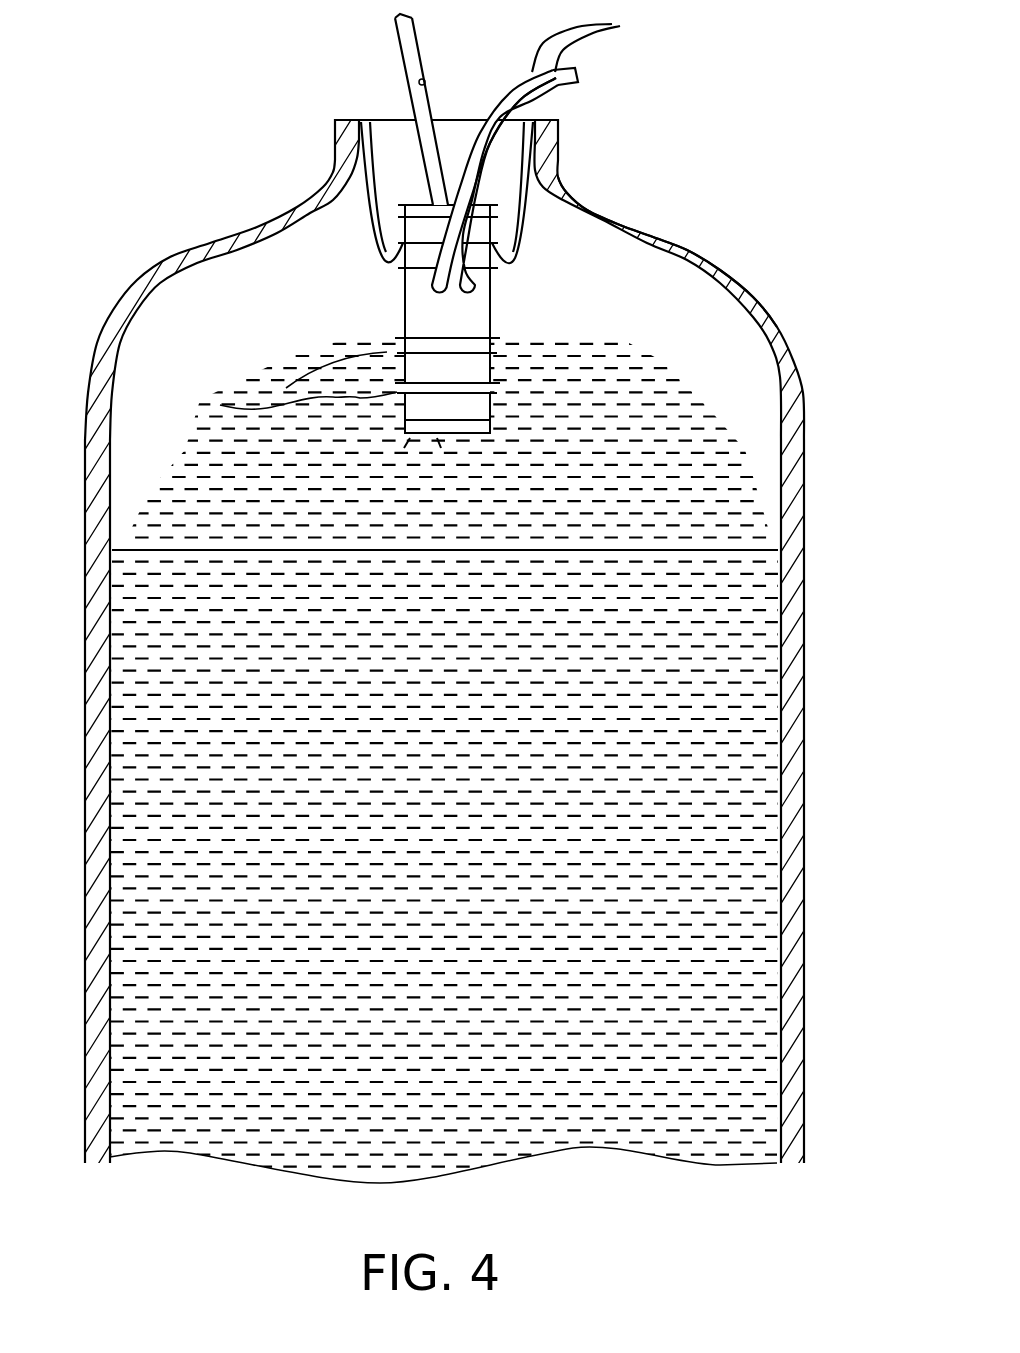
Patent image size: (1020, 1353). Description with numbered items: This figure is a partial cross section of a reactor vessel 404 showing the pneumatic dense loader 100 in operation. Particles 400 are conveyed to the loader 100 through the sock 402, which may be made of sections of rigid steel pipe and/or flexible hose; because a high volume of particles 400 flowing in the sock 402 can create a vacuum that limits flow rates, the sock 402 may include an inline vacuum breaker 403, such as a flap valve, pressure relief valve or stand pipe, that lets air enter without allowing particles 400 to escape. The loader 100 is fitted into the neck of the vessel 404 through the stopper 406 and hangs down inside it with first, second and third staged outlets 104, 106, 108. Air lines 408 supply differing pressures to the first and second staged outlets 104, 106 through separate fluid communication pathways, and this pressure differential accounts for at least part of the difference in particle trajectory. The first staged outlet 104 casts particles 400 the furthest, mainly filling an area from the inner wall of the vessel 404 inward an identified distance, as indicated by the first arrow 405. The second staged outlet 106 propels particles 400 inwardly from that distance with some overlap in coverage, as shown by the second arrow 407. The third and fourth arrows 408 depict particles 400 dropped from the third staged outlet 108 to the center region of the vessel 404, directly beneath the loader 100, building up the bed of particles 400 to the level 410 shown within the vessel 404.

The pneumatic dense loader 100 is at (518, 297).
The first staged outlet 104 is at (510, 343).
The second staged outlet 106 is at (508, 388).
The third staged outlet 108 is at (478, 446).
The particles 400 is at (705, 463).
The sock 402 is at (400, 30).
The inline vacuum breaker 403 is at (430, 82).
The vessel 404 is at (660, 237).
The first arrow 405 is at (327, 363).
The stopper 406 is at (352, 162).
The second arrow 407 is at (397, 392).
The air lines 408 is at (615, 25).
The liquid level 410 is at (733, 547).